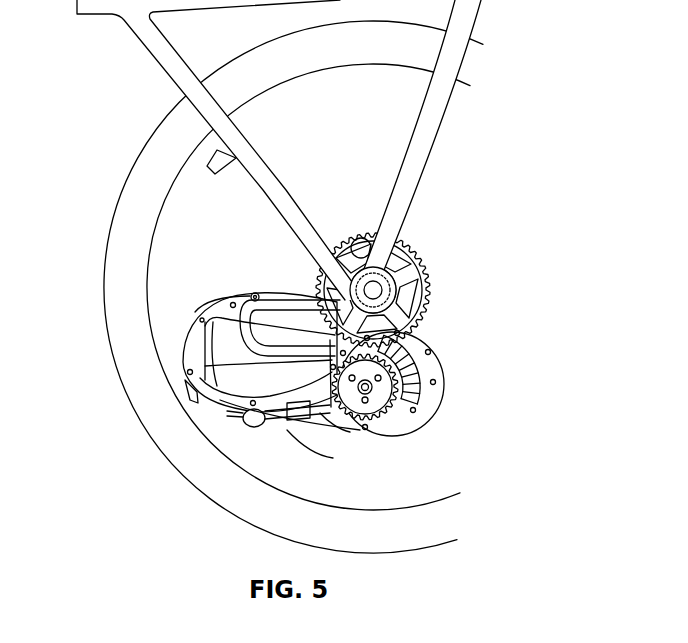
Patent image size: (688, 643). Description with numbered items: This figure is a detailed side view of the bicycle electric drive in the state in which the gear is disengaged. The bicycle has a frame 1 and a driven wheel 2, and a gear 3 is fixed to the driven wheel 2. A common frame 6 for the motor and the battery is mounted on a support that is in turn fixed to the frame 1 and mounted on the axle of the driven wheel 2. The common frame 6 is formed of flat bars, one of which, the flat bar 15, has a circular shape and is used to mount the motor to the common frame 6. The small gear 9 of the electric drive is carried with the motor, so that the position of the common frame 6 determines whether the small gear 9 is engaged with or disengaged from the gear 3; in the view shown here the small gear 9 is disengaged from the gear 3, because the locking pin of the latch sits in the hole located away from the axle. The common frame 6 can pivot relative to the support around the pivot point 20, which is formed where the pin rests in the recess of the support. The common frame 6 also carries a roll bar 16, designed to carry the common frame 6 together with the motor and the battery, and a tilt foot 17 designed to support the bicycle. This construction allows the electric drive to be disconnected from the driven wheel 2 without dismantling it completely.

The frame 1 is at (143, 45).
The driven wheel 2 is at (145, 160).
The gear 3 is at (418, 258).
The common frame 6 is at (184, 360).
The small gear 9 is at (388, 415).
The flat bar 15 is at (436, 364).
The roll bar 16 is at (245, 300).
The tilt foot 17 is at (290, 428).
The pivot point 20 is at (282, 295).